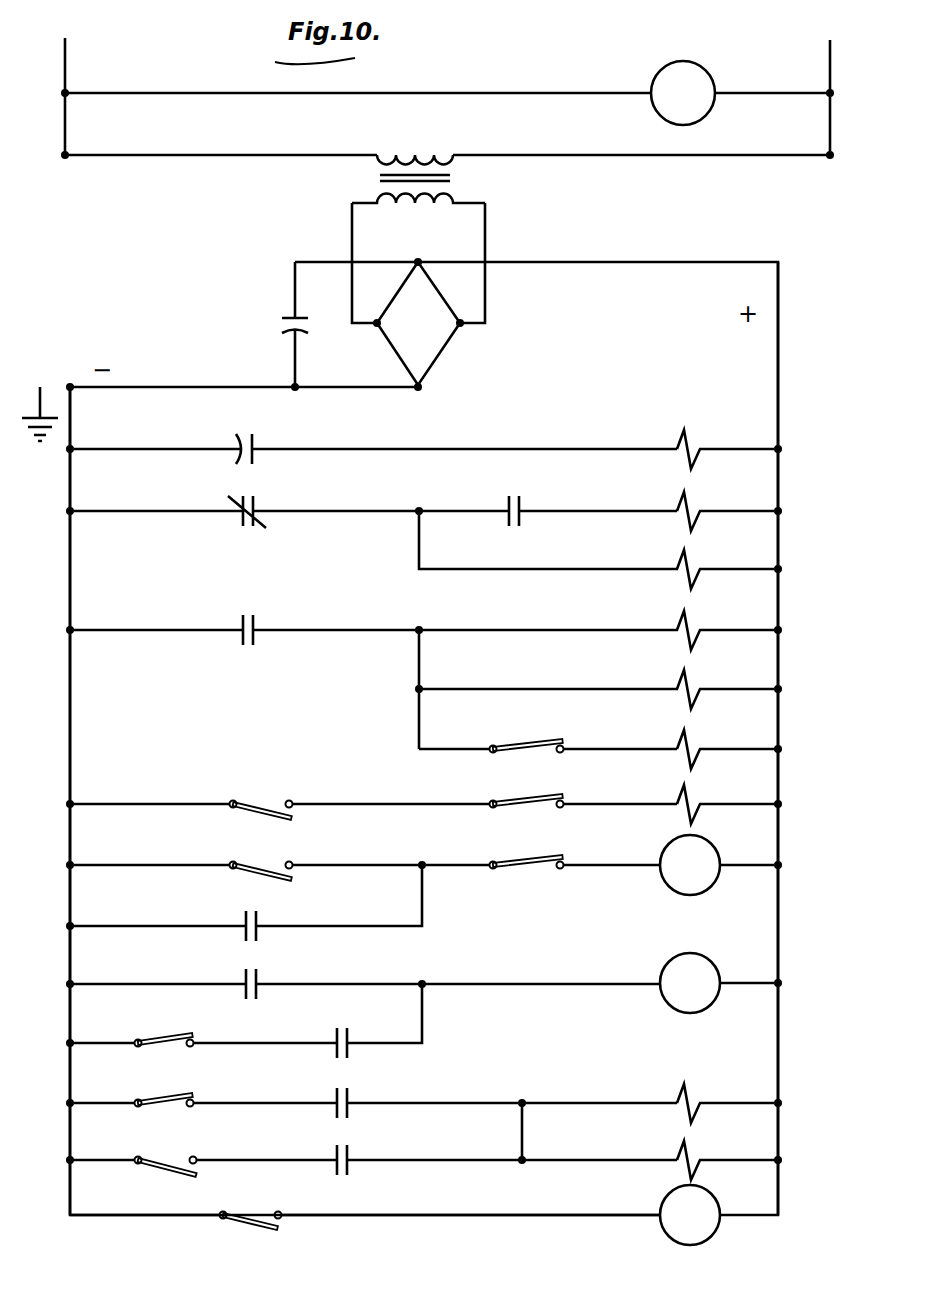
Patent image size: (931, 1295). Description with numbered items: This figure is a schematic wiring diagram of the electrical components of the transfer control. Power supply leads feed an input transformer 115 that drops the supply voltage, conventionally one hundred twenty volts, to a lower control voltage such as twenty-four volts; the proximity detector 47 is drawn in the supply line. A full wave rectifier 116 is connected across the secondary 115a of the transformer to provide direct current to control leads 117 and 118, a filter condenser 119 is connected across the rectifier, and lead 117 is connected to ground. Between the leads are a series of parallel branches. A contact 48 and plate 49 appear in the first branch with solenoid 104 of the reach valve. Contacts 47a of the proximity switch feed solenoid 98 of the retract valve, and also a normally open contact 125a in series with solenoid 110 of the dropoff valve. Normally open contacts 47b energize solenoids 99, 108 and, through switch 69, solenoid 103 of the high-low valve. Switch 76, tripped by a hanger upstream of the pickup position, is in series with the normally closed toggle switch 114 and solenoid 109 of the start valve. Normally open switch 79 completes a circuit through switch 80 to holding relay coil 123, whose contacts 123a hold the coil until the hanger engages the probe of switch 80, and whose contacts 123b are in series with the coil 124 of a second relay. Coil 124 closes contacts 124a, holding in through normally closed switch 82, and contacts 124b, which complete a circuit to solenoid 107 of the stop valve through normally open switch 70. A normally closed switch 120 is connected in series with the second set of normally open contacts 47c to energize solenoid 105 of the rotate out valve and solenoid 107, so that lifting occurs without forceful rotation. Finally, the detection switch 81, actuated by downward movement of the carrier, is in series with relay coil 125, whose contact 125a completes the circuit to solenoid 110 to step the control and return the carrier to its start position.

The proximity detector 47 is at (707, 88).
The input transformer 115 is at (480, 181).
The transformer secondary 115a is at (418, 205).
The full wave rectifier 116 is at (445, 348).
The filter condenser 119 is at (290, 320).
The control lead 118 is at (778, 394).
The control lead 117 is at (70, 548).
The contact 48 is at (238, 458).
The plate 49 is at (258, 452).
The solenoid 104 is at (688, 446).
The contacts 47a is at (258, 508).
The normally open contact 125a is at (522, 505).
The solenoid 110 is at (688, 508).
The solenoid 98 is at (690, 566).
The normally open contacts 47b is at (258, 627).
The solenoid 99 is at (690, 626).
The solenoid 108 is at (690, 686).
The switch 69 is at (530, 742).
The solenoid 103 is at (690, 746).
The switch 76 is at (265, 798).
The toggle switch 114 is at (525, 793).
The solenoid 109 is at (690, 801).
The sensor switch 79 is at (270, 860).
The sensor switch 80 is at (525, 872).
The holding relay coil 123 is at (695, 893).
The holding contacts 123a is at (262, 925).
The holding contacts 123b is at (262, 980).
The relay coil 124 is at (708, 965).
The sensor switch 82 is at (165, 1040).
The holding contacts 124a is at (352, 1038).
The switch 120 is at (175, 1098).
The normally open contacts 47c is at (352, 1098).
The solenoid 105 is at (690, 1098).
The switch 70 is at (170, 1160).
The holding contacts 124b is at (352, 1155).
The solenoid 107 is at (690, 1155).
The detection switch 81 is at (242, 1212).
The relay coil 125 is at (675, 1243).